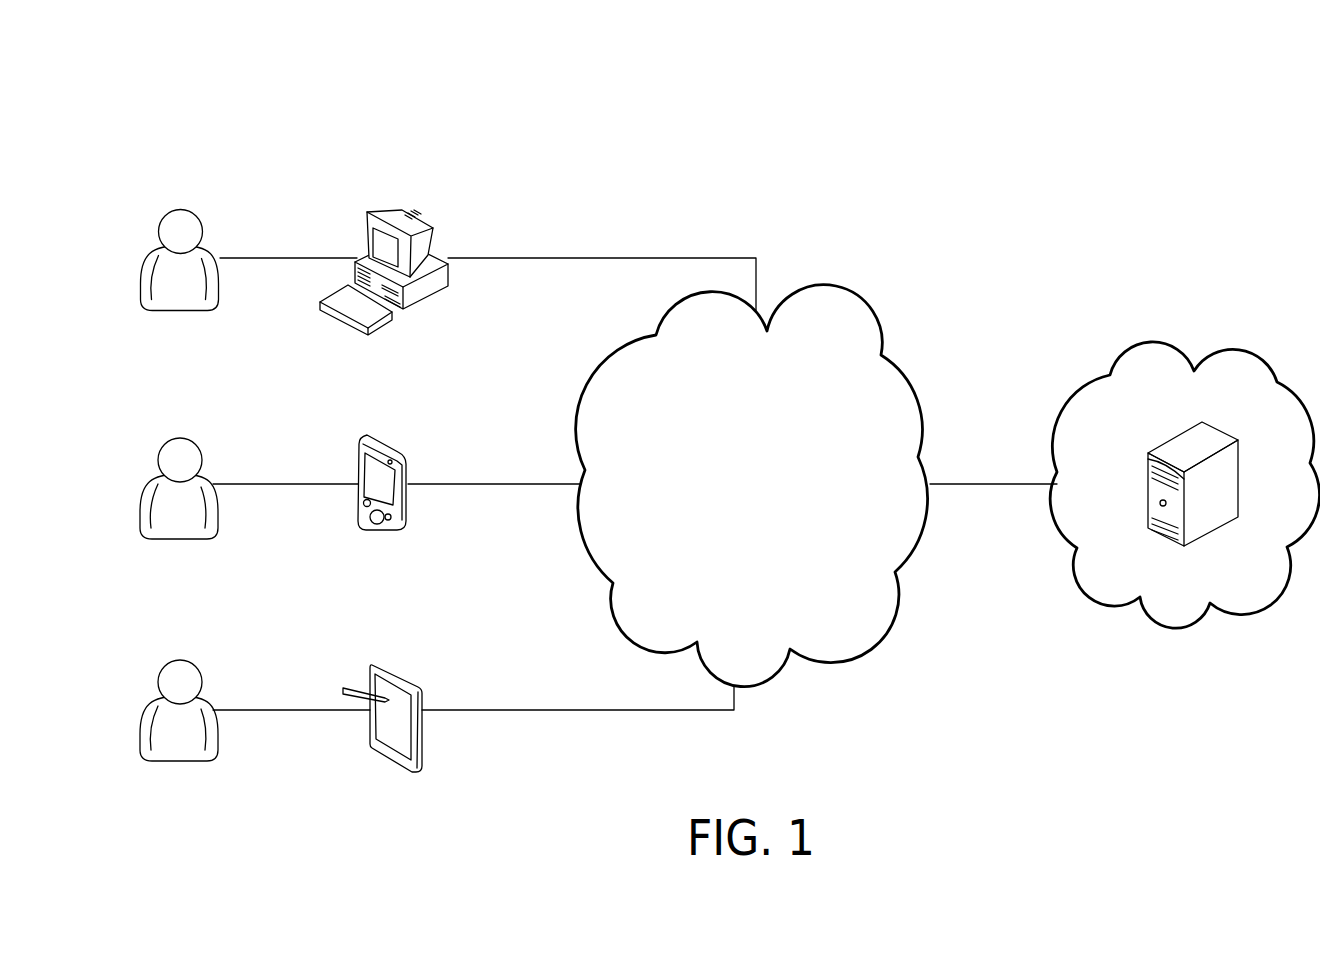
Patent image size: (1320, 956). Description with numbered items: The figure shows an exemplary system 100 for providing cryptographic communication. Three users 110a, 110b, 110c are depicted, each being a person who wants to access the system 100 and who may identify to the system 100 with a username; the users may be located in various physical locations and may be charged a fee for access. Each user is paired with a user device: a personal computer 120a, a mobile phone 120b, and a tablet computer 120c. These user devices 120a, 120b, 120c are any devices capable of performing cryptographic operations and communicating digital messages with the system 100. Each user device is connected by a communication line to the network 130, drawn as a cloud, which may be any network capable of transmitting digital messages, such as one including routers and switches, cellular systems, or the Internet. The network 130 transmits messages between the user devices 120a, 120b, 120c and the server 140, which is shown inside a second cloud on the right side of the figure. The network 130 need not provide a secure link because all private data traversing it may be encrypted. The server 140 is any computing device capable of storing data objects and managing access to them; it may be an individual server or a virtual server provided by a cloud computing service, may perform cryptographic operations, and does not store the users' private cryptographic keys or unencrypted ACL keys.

The system 100 is at (153, 76).
The user 110a is at (172, 212).
The user 110b is at (165, 442).
The user 110c is at (162, 668).
The user device 120a is at (373, 210).
The user device 120b is at (360, 438).
The user device 120c is at (373, 665).
The network 130 is at (854, 307).
The server 140 is at (1258, 355).